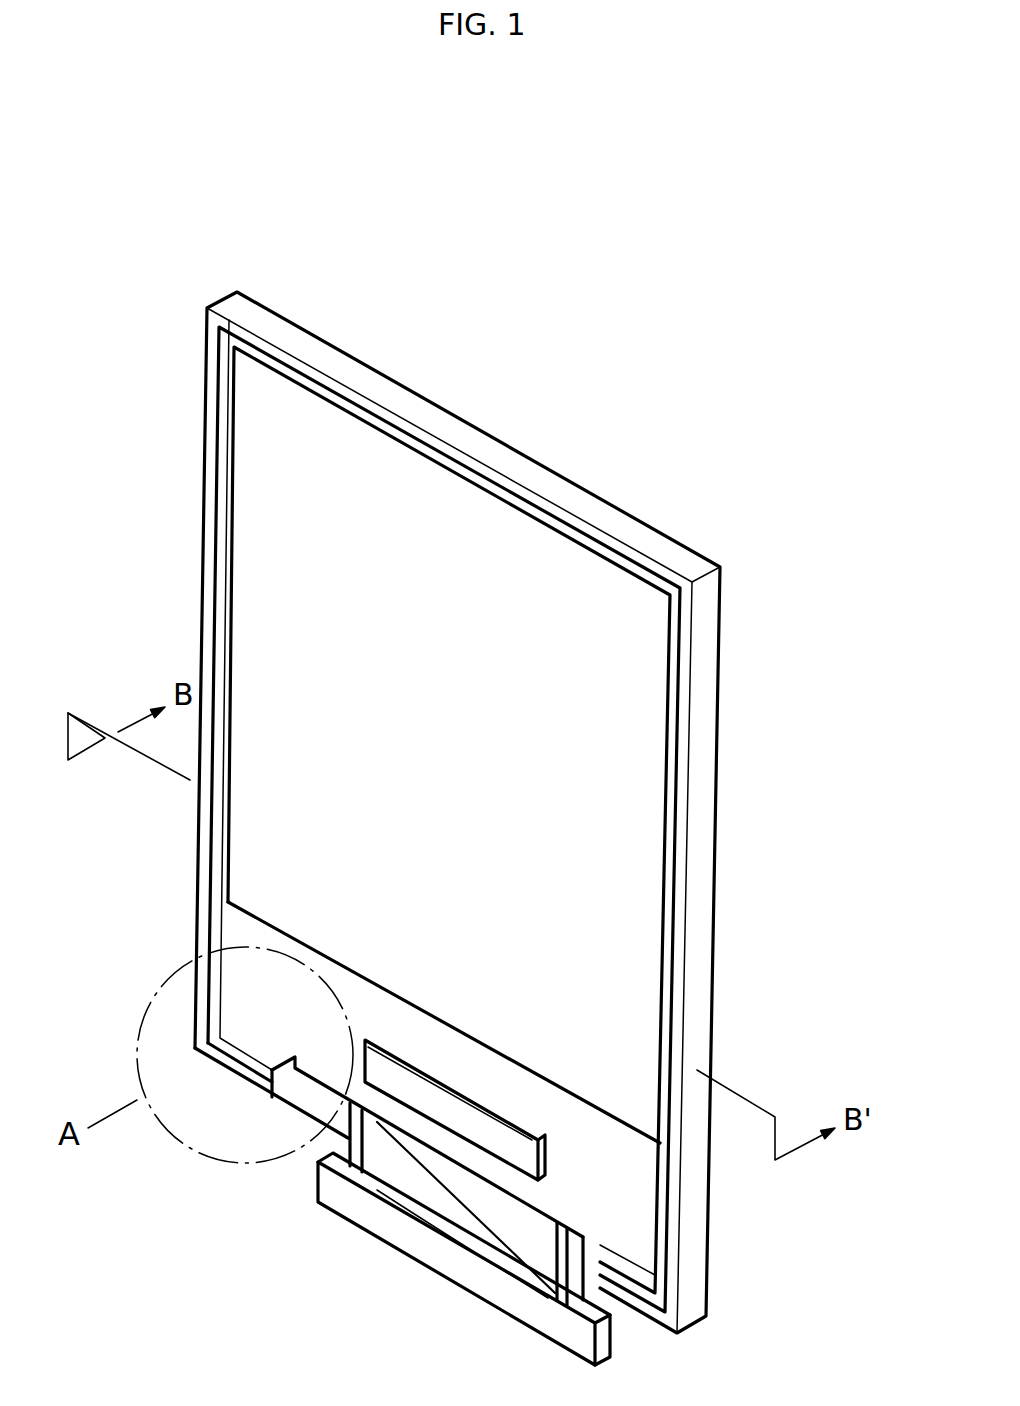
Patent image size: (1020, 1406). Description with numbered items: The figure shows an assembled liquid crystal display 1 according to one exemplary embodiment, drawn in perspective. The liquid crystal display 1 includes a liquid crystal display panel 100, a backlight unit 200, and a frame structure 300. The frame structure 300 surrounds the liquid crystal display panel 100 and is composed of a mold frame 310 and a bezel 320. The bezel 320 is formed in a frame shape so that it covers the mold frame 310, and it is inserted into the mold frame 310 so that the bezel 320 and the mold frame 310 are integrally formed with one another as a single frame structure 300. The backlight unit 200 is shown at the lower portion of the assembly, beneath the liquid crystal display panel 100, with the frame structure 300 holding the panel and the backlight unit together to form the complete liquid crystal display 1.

The liquid crystal display 1 is at (660, 398).
The liquid crystal display panel 100 is at (287, 546).
The backlight unit 200 is at (477, 1278).
The frame structure 300 is at (825, 757).
The mold frame 310 is at (670, 740).
The bezel 320 is at (682, 815).